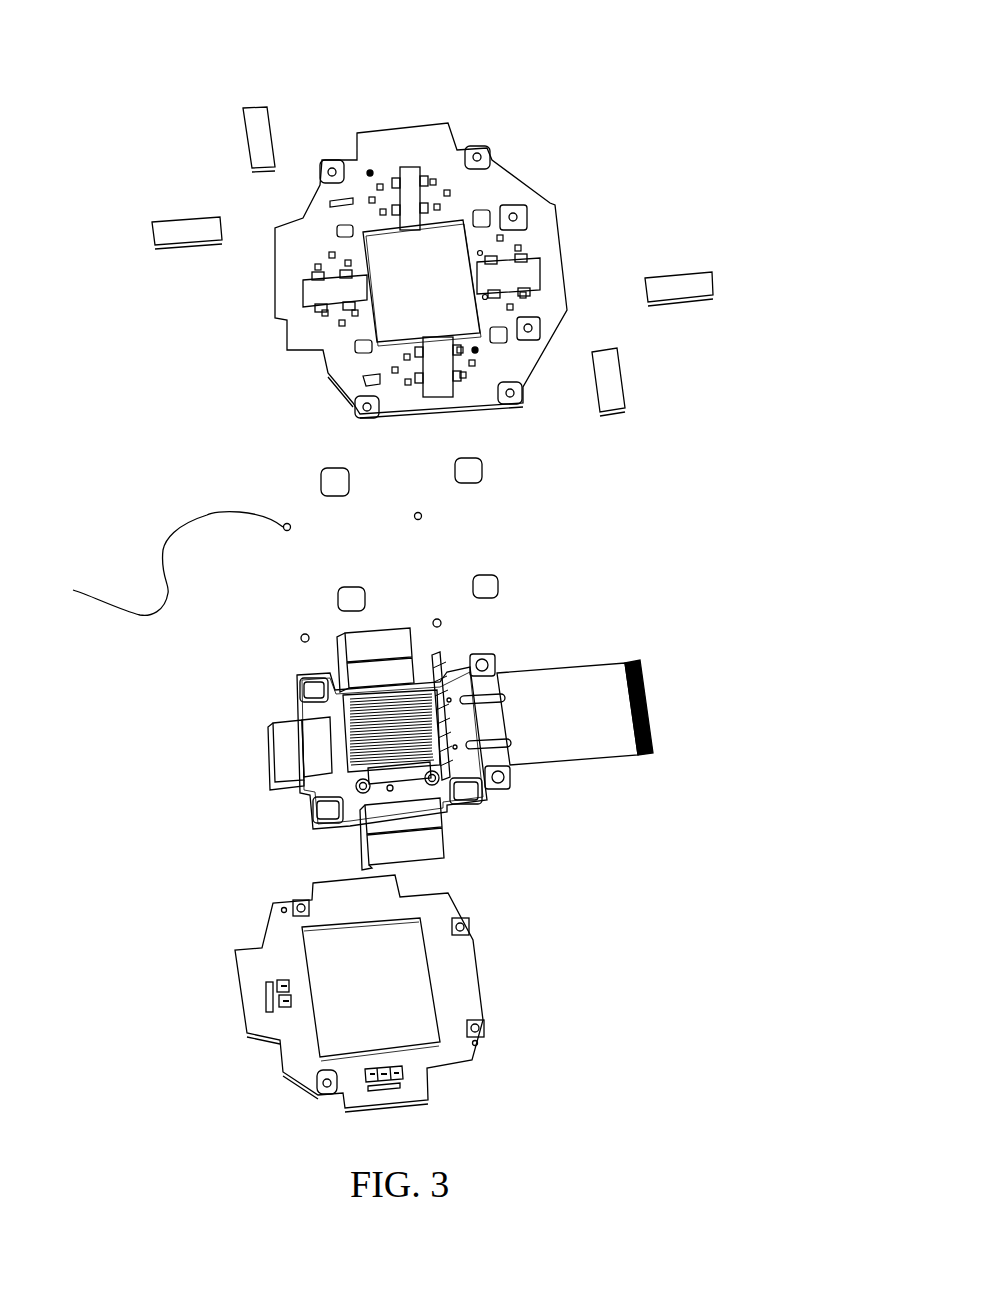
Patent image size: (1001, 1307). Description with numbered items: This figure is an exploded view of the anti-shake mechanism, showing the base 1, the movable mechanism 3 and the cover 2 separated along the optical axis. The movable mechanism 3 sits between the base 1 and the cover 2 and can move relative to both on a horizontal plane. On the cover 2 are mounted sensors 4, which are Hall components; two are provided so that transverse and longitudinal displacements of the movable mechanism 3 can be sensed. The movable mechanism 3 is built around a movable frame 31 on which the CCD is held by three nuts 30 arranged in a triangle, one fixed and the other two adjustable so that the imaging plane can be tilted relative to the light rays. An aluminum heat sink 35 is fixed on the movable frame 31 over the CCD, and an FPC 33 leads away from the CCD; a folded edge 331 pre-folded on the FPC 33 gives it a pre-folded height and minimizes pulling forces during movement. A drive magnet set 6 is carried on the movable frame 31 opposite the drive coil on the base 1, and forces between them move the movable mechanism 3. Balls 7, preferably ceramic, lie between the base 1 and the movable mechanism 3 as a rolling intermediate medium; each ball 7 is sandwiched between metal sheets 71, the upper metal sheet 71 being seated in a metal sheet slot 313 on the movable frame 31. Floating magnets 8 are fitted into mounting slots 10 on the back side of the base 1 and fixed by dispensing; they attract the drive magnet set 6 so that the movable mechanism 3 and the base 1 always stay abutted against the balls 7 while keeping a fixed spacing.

The base 1 is at (480, 190).
The cover 2 is at (460, 992).
The movable mechanism 3 is at (497, 803).
The sensor 4 is at (275, 995).
The drive magnet set 6 is at (323, 758).
The ball 7 is at (242, 577).
The floating magnet 8 is at (178, 237).
The mounting slot 10 is at (405, 190).
The nut 30 is at (378, 797).
The movable frame 31 is at (283, 788).
The FPC 33 is at (570, 725).
The heat sink 35 is at (303, 700).
The metal sheet 71 is at (473, 470).
The metal sheet slot 313 is at (313, 692).
The folded edge 331 is at (445, 667).